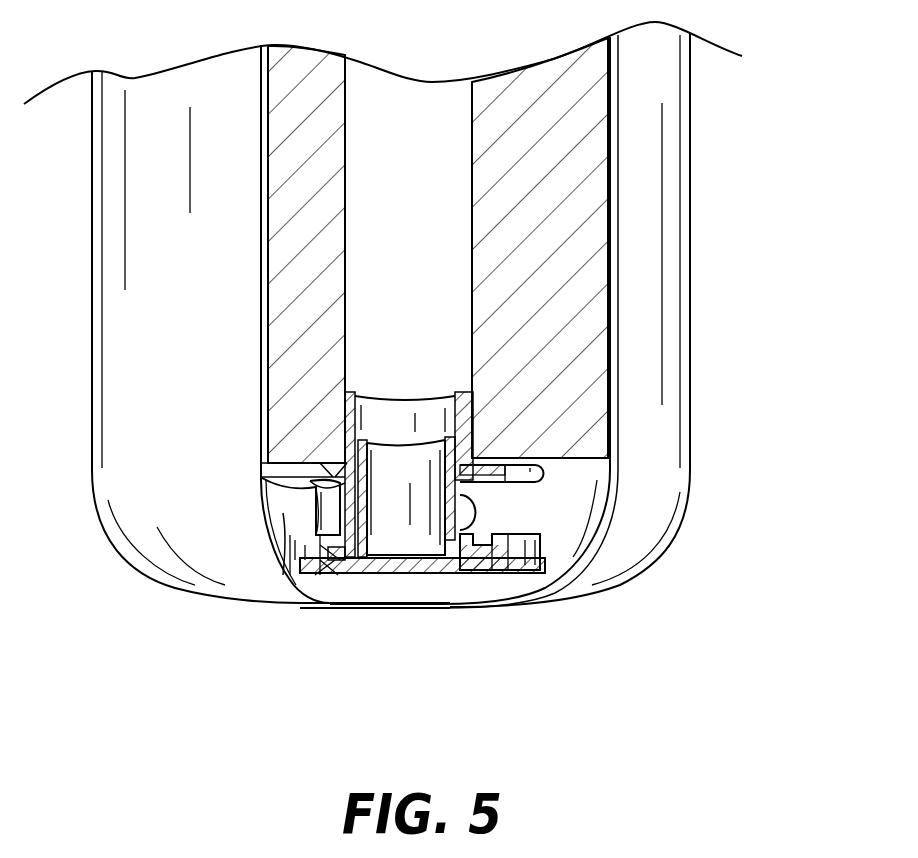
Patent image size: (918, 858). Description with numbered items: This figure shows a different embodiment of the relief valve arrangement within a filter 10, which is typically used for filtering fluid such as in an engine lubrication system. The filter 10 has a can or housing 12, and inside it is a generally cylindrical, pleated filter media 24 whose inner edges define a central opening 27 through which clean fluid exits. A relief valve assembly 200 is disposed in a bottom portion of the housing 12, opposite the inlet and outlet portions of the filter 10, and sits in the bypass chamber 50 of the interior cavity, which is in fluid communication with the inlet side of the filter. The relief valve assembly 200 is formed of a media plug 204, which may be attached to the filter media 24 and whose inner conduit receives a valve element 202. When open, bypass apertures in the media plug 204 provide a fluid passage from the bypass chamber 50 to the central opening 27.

The filter 10 is at (725, 175).
The housing 12 is at (638, 413).
The filter media 24 is at (313, 253).
The central opening 27 is at (400, 135).
The media plug 204 is at (472, 405).
The bypass chamber 50 is at (283, 513).
The relief valve assembly 200 is at (473, 568).
The valve element 202 is at (530, 555).